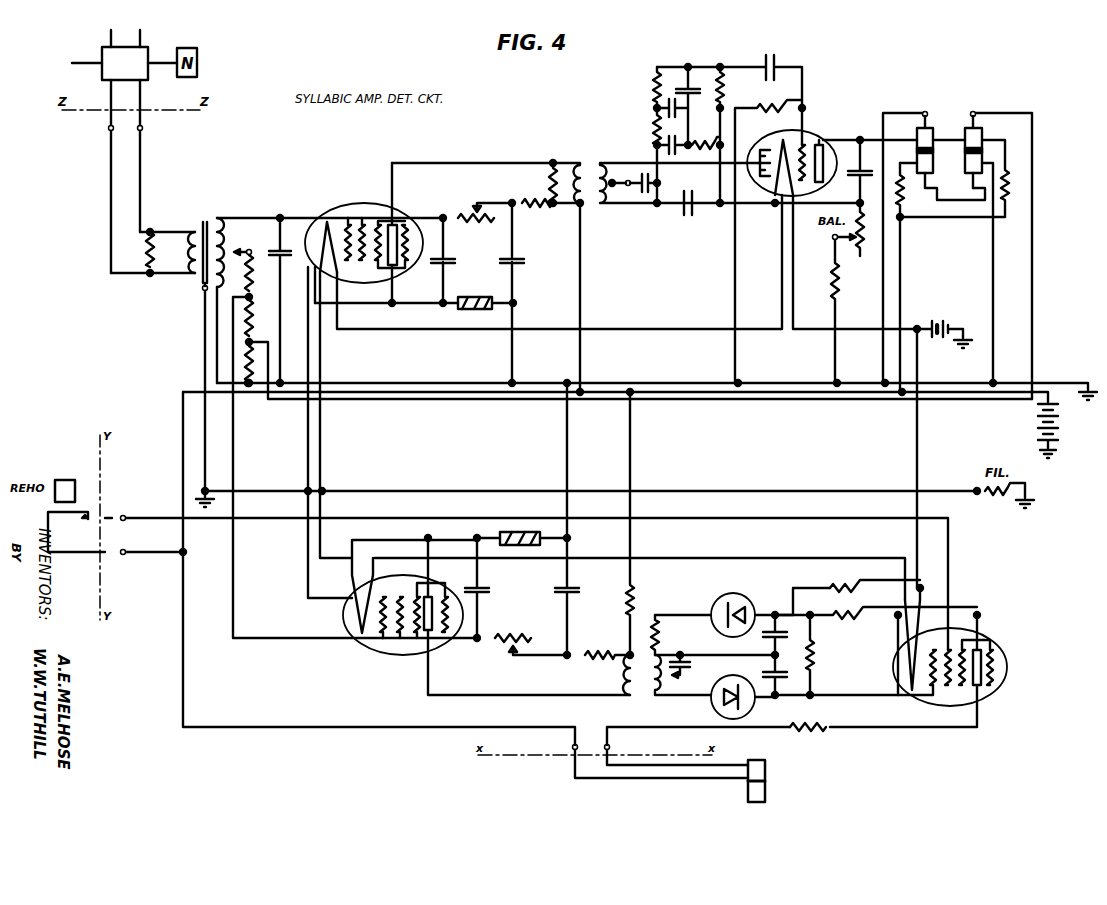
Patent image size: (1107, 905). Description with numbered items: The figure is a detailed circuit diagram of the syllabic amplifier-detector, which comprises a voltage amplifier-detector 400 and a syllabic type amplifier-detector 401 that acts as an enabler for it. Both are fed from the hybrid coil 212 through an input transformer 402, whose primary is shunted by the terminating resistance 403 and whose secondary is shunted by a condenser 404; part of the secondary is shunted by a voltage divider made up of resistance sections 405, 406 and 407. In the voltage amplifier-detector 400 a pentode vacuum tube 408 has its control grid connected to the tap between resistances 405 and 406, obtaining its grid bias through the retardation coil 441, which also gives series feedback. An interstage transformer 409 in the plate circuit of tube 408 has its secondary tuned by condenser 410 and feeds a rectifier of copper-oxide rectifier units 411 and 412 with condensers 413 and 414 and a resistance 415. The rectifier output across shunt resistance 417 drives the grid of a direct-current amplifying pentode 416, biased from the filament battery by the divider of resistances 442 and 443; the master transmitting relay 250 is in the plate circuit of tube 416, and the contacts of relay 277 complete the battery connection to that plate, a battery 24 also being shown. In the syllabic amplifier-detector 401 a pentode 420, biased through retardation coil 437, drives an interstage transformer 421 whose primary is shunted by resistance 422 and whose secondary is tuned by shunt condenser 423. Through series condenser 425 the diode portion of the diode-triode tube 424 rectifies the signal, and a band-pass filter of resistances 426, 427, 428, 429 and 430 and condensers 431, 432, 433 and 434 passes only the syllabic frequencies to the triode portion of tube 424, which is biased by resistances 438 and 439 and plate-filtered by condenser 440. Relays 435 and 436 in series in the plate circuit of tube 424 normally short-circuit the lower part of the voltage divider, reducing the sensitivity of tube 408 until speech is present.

The hybrid coil 212 is at (124, 151).
The battery 24 is at (948, 318).
The master transmitting relay 250 is at (766, 768).
The relay 277 is at (74, 482).
The voltage amplifier-detector 400 is at (500, 666).
The syllabic type amplifier-detector 401 is at (559, 280).
The input transformer 402 is at (203, 222).
The terminating resistance 403 is at (148, 258).
The condenser 404 is at (280, 240).
The resistance section 405 is at (245, 290).
The resistance section 406 is at (245, 318).
The resistance section 407 is at (245, 352).
The pentode vacuum tube 408 is at (420, 560).
The interstage transformer 409 is at (645, 700).
The condenser 410 is at (700, 648).
The copper-oxide rectifier unit 411 is at (712, 705).
The copper-oxide rectifier unit 412 is at (725, 593).
The condenser 413 is at (762, 674).
The condenser 414 is at (762, 634).
The resistor 415 is at (653, 618).
The pentode vacuum tube 416 is at (985, 632).
The shunt resistance 417 is at (815, 660).
The pentode amplifying vacuum tube 420 is at (358, 200).
The interstage transformer 421 is at (593, 163).
The resistance 422 is at (548, 175).
The shunt condenser 423 is at (640, 195).
The diode-triode vacuum tube 424 is at (815, 130).
The series condenser 425 is at (693, 212).
The resistance 426 is at (652, 128).
The resistance 427 is at (652, 85).
The resistance 428 is at (728, 84).
The resistance 429 is at (703, 140).
The resistance 430 is at (770, 232).
The condenser 431 is at (672, 156).
The condenser 432 is at (655, 108).
The condenser 433 is at (690, 87).
The condenser 434 is at (786, 50).
The relay 435 is at (935, 98).
The relay 436 is at (970, 112).
The retardation coil 437 is at (492, 284).
The resistance 438 is at (860, 298).
The resistance 439 is at (855, 241).
The condenser 440 is at (852, 170).
The retardation coil 441 is at (525, 547).
The resistance 442 is at (843, 584).
The resistance 443 is at (850, 619).